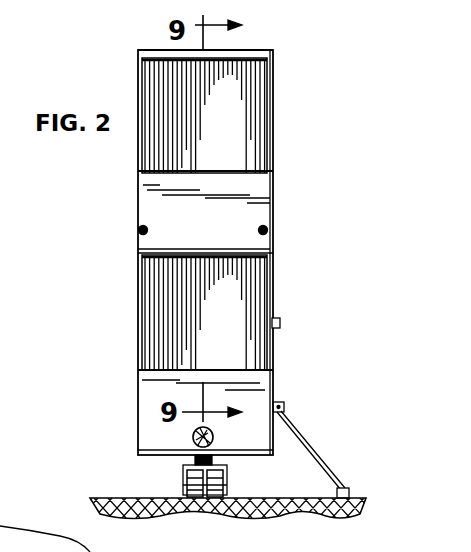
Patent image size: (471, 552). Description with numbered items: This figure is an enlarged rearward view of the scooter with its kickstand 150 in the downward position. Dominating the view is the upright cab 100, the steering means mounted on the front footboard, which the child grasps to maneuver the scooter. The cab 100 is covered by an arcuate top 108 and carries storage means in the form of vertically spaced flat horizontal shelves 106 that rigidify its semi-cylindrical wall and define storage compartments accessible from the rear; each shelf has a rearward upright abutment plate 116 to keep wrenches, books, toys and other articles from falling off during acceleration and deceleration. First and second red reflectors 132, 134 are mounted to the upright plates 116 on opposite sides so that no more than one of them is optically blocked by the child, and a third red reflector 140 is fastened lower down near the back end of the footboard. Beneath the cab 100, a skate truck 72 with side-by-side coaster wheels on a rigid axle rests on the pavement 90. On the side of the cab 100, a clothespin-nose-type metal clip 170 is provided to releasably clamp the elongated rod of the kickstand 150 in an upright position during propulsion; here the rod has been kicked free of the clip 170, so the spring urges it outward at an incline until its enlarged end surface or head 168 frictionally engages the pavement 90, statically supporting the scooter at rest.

The upright cab 100 is at (274, 139).
The top 108 is at (258, 49).
The rearward upright abutment plate 116 is at (226, 173).
The horizontal shelves 106 is at (244, 258).
The first red reflector 132 is at (148, 230).
The second red reflector 134 is at (258, 231).
The metal clip 170 is at (281, 323).
The third red reflector 140 is at (213, 436).
The rearward skate truck 72 is at (227, 490).
The kickstand 150 is at (300, 435).
The enlarged end surface or head 168 is at (337, 492).
The pavement 90 is at (116, 498).